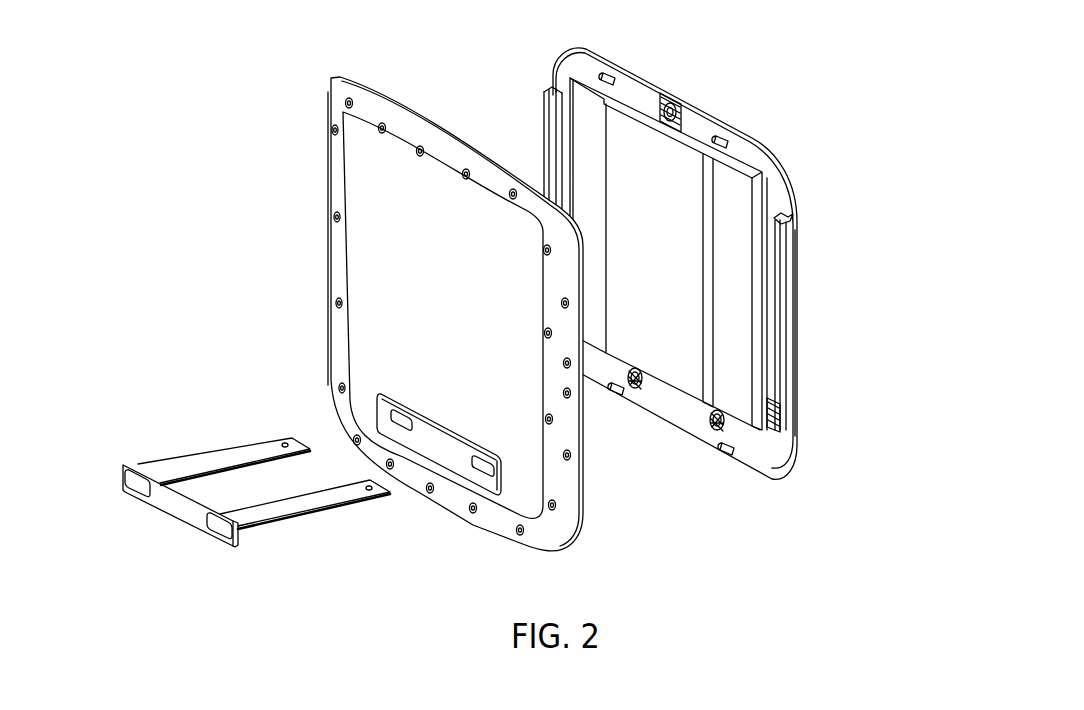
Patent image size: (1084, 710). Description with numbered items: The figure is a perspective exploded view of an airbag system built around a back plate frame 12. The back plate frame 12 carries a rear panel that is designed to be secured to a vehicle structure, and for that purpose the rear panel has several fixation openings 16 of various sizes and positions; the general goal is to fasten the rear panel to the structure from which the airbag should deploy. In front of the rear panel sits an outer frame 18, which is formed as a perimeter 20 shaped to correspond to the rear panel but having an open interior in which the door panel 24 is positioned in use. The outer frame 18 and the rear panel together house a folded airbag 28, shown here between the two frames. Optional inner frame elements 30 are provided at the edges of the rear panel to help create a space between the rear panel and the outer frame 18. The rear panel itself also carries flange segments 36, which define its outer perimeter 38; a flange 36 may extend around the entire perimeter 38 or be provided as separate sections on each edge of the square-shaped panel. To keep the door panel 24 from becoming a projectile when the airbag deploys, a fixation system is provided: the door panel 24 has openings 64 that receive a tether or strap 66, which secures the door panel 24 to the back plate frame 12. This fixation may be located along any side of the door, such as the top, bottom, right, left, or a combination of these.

The back plate frame 12 is at (774, 180).
The fixation openings 16 is at (668, 97).
The outer frame 18 is at (332, 99).
The perimeter 20 is at (329, 192).
The door panel 24 is at (437, 281).
The folded airbag 28 is at (667, 260).
The inner frame elements 30 is at (782, 235).
The flange segments 36 is at (792, 212).
The outer perimeter 38 is at (799, 261).
The openings 64 is at (488, 466).
The tether or strap 66 is at (327, 500).